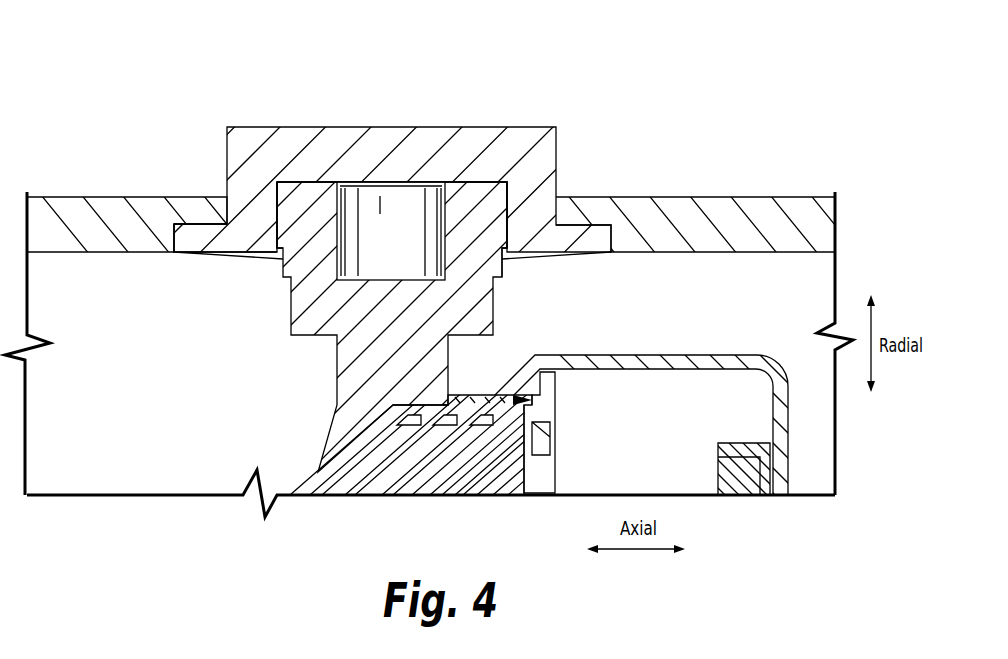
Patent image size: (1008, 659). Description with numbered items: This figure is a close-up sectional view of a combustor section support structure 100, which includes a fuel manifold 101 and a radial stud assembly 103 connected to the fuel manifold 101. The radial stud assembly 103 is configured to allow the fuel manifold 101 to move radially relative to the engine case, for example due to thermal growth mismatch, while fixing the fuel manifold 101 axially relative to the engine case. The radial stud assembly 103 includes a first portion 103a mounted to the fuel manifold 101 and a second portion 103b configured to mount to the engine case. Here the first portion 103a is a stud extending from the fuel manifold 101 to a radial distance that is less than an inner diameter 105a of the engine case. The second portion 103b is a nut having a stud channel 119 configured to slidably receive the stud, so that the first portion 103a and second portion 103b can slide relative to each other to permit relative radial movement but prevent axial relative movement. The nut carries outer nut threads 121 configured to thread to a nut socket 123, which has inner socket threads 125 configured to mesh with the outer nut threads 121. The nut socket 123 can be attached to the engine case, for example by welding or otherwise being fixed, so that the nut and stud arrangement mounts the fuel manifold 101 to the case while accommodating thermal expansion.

The combustor section support structure 100 is at (72, 35).
The fuel manifold 101 is at (448, 496).
The radial stud assembly 103 is at (212, 101).
The first portion 103a is at (410, 360).
The second portion 103b is at (475, 218).
The inner diameter 105a is at (792, 252).
The stud channel 119 is at (403, 210).
The outer nut threads 121 is at (289, 199).
The nut socket 123 is at (194, 237).
The inner socket threads 125 is at (276, 203).